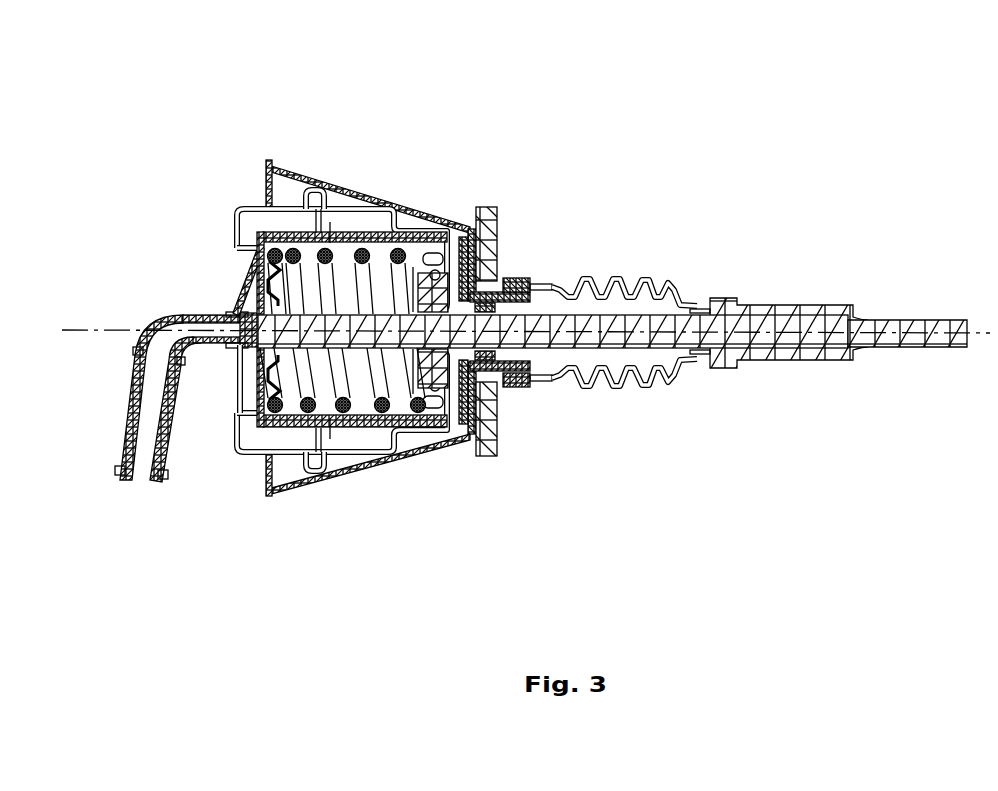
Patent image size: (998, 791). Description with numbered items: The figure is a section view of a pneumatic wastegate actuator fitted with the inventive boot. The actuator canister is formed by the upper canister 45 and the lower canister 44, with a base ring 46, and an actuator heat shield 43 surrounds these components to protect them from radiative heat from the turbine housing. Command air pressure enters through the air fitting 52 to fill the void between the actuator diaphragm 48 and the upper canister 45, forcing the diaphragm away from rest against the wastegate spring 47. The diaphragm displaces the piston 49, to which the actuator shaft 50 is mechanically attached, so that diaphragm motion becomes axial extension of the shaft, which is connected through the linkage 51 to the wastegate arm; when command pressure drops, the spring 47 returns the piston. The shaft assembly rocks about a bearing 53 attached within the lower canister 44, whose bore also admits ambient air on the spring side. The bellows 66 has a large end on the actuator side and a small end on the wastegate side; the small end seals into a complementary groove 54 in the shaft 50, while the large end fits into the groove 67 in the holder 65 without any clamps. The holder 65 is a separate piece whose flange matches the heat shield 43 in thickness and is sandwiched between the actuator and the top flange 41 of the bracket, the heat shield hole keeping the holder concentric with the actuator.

The top flange 41 is at (489, 431).
The actuator heat shield 43 is at (290, 168).
The lower canister 44 is at (404, 208).
The upper canister 45 is at (288, 215).
The base ring 46 is at (497, 218).
The wastegate spring 47 is at (328, 257).
The actuator diaphragm 48 is at (313, 433).
The piston 49 is at (233, 313).
The actuator shaft 50 is at (595, 340).
The linkage 51 is at (863, 333).
The air fitting 52 is at (183, 325).
The bearing 53 is at (415, 410).
The groove 54 is at (696, 307).
The holder 65 is at (527, 383).
The bellows 66 is at (610, 280).
The groove 67 is at (530, 276).